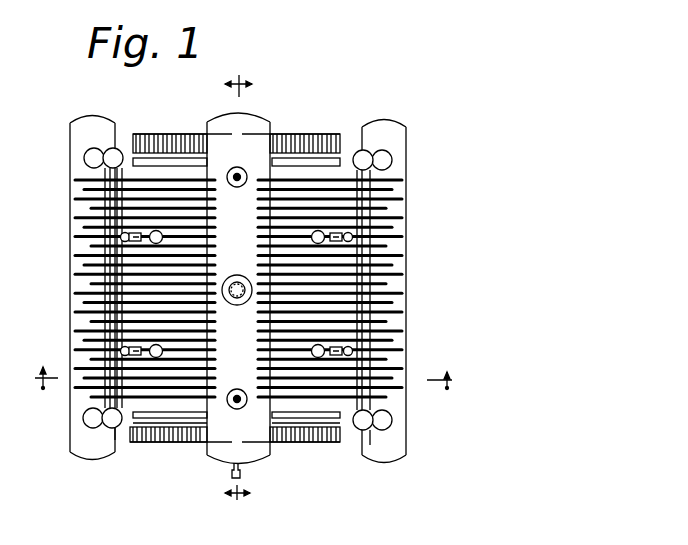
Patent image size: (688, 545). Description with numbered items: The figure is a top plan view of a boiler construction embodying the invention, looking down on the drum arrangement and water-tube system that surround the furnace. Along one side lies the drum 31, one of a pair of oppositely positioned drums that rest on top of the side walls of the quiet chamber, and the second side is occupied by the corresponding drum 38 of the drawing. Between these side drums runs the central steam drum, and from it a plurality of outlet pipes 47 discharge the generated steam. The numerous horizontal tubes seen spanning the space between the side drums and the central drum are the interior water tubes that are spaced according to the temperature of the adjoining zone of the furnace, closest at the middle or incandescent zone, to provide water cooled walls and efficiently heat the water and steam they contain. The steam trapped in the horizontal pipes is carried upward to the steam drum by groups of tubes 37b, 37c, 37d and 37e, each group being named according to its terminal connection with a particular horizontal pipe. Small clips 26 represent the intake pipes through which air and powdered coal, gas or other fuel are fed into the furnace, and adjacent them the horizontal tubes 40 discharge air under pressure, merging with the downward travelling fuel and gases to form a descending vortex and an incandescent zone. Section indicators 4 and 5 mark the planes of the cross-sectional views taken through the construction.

The drum 31 is at (88, 128).
The right side post 38 is at (398, 448).
The horizontal tubes 40 is at (125, 233).
The intake pipes 26 is at (122, 236).
The outlet pipes 47 is at (237, 167).
The tubes 37b is at (338, 140).
The tubes 37c is at (315, 138).
The tubes 37d is at (326, 136).
The pipes 37e is at (343, 142).
The section line 4- 4 is at (242, 378).
The section line 5- 5 is at (238, 288).